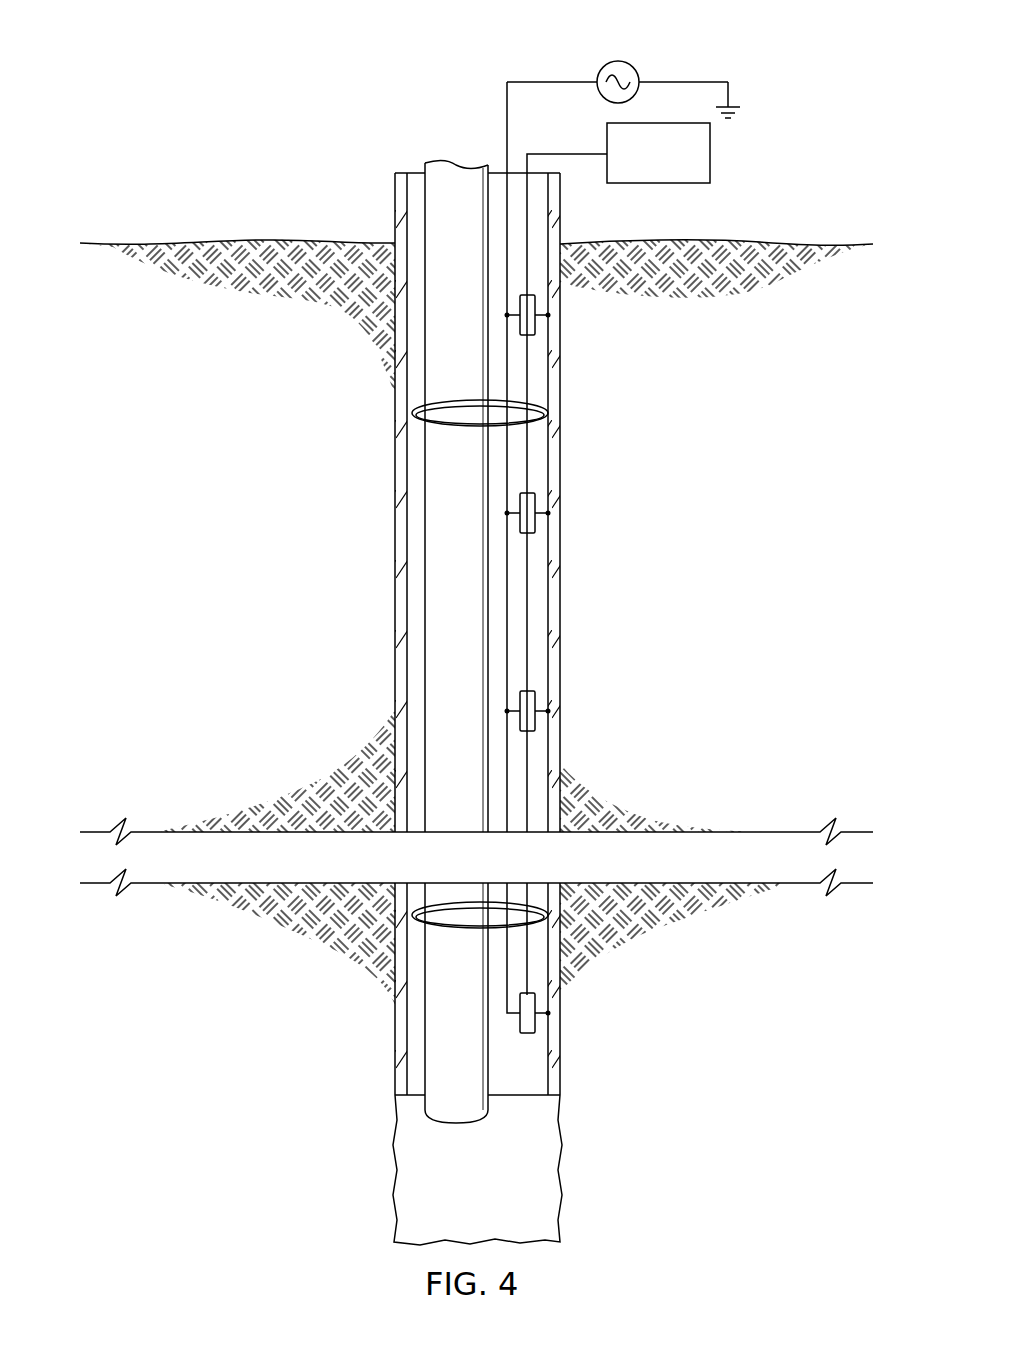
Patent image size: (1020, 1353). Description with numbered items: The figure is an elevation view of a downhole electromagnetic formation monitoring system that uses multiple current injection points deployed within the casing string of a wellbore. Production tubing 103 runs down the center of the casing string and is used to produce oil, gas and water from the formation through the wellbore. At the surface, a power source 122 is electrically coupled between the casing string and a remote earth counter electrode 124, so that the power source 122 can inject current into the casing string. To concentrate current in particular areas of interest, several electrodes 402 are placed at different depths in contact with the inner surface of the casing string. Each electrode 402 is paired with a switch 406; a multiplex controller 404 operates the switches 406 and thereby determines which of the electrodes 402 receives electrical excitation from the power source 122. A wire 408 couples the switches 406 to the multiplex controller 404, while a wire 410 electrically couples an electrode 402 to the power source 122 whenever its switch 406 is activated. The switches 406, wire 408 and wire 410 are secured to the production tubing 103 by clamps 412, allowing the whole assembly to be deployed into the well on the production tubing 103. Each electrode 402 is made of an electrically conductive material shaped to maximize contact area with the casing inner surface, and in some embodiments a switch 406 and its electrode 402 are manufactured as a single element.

The production tubing 103 is at (438, 498).
The power source 122 is at (620, 61).
The remote earth counter electrode 124 is at (742, 112).
The electrode 402 is at (548, 315).
The multiplex controller 404 is at (677, 164).
The switch 406 is at (535, 324).
The wire 408 is at (562, 154).
The wire 410 is at (507, 115).
The clamp 412 is at (545, 428).